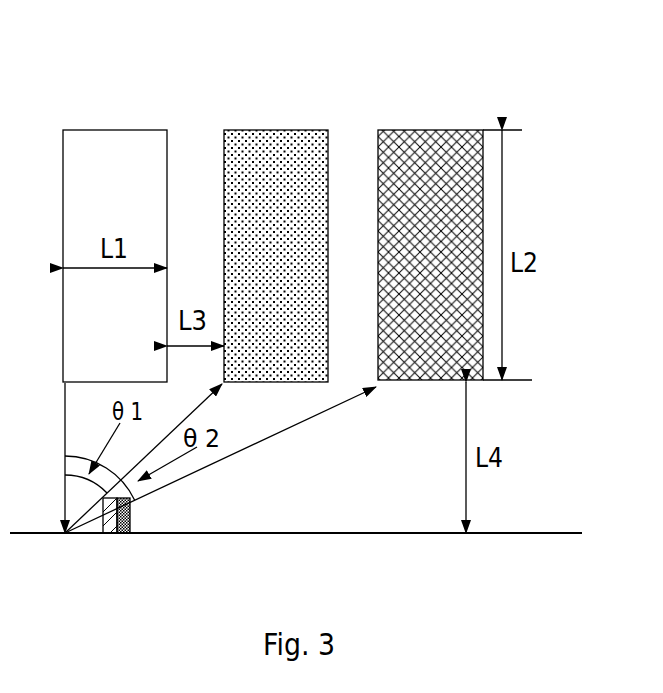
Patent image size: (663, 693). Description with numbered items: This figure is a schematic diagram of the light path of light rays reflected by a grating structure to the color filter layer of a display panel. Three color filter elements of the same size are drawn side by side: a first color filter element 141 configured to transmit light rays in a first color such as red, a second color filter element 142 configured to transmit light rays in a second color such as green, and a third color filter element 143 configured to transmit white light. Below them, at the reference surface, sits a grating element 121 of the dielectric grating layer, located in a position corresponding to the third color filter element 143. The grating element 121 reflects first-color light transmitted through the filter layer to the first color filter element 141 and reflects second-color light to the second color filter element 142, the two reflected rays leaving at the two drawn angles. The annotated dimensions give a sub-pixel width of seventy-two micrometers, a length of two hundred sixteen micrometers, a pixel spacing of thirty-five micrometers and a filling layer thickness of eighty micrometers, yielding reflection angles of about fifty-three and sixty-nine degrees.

The third color filter element 143 is at (100, 142).
The second color filter element 142 is at (290, 130).
The first color filter element 141 is at (448, 147).
The grating element 121 is at (132, 518).